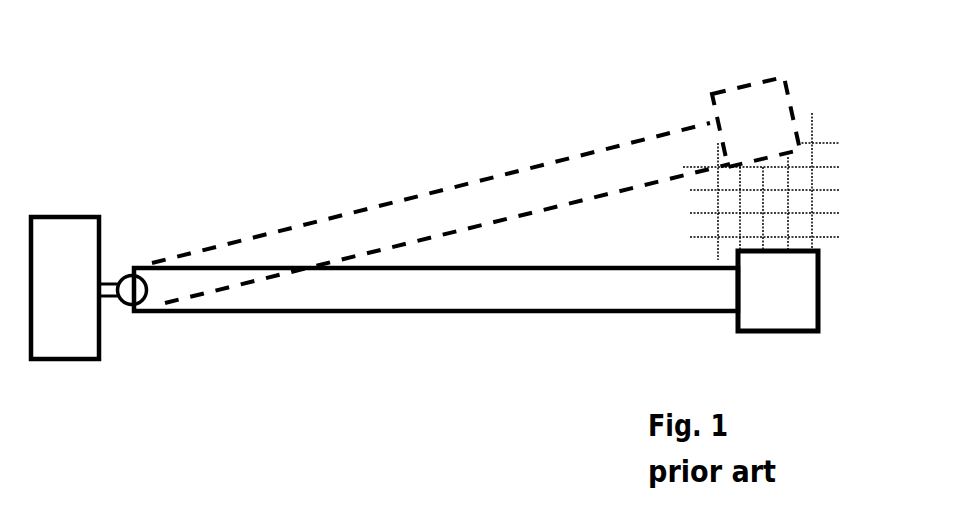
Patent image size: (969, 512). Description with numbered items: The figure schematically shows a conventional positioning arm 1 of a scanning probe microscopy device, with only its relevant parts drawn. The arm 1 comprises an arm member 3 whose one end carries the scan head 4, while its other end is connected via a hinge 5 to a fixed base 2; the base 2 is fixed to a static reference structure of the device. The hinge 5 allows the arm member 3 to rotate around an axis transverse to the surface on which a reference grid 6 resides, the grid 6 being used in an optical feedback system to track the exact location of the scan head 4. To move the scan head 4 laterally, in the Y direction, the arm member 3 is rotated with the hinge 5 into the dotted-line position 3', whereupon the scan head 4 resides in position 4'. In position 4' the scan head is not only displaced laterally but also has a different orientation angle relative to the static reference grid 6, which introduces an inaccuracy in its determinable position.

The positioning arm 1 is at (250, 84).
The fixed base 2 is at (62, 216).
The arm member 3 is at (436, 340).
The rotated position of the arm member 3' is at (441, 211).
The scan head 4 is at (783, 320).
The displaced position of the scan head 4' is at (750, 93).
The hinge 5 is at (122, 305).
The reference grid 6 is at (830, 143).